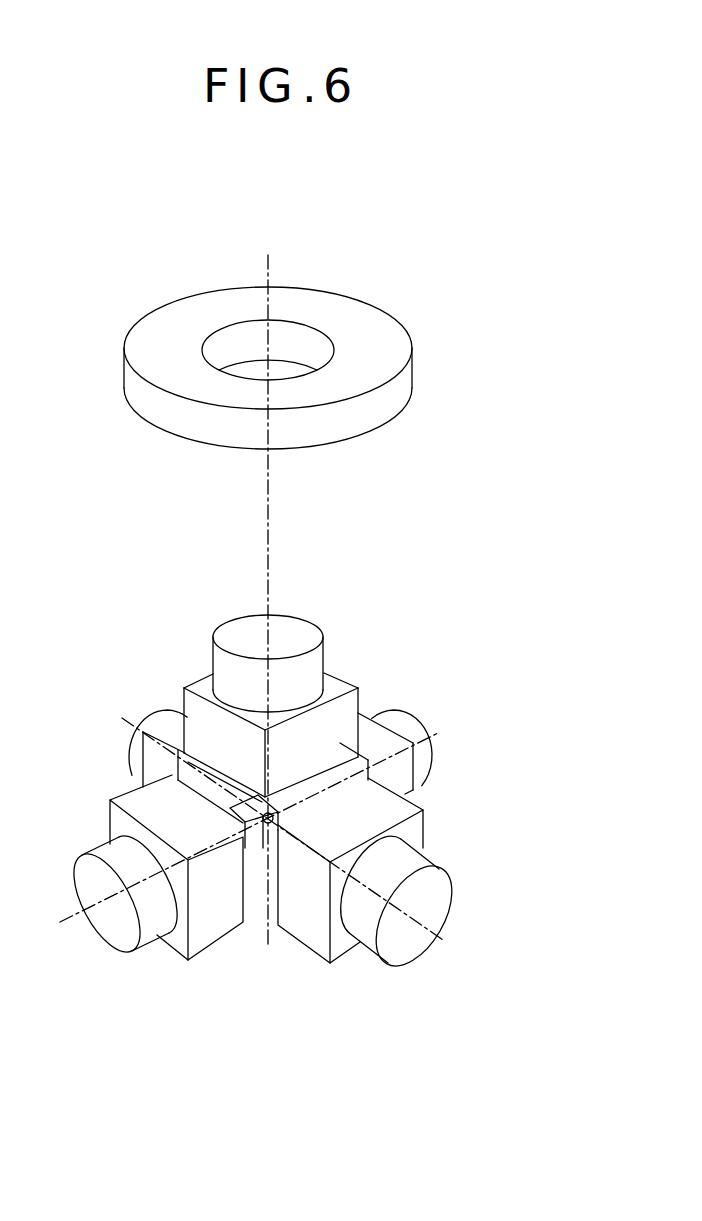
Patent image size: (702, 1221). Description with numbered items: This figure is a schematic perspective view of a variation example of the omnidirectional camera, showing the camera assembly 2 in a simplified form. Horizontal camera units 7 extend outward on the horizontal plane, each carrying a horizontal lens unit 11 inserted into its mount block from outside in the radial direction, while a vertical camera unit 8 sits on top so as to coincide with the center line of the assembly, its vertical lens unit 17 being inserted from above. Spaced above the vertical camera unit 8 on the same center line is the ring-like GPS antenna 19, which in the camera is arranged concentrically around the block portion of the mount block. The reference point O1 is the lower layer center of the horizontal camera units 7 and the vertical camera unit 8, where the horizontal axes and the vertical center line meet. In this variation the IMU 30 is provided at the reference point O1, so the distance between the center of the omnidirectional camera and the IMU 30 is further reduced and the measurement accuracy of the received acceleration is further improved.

The camera assembly 2 is at (368, 694).
The horizontal camera unit 7 is at (338, 958).
The vertical camera unit 8 is at (338, 672).
The horizontal lens unit 11 is at (452, 897).
The vertical lens unit 17 is at (288, 614).
The GPS antenna 19 is at (390, 316).
The reference point O1 is at (271, 812).
The IMU 30 is at (268, 848).